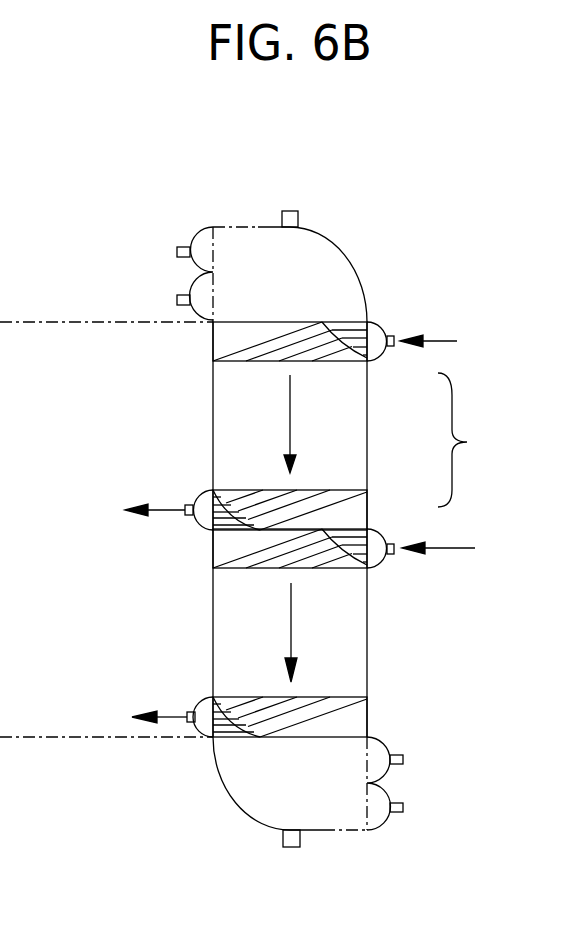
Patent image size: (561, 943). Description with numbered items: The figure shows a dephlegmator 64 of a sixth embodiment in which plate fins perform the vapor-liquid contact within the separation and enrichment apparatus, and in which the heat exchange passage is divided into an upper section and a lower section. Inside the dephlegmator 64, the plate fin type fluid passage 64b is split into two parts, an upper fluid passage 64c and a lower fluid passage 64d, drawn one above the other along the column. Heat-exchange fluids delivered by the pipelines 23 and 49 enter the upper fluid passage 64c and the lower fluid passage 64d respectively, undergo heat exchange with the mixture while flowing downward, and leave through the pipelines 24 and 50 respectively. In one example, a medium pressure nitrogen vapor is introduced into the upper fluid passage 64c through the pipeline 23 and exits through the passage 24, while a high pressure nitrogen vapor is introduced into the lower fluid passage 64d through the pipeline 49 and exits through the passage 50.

The dephlegmator 64 is at (350, 228).
The fluid passage 64b is at (480, 440).
The upper fluid passage 64c is at (337, 450).
The lower fluid passage 64d is at (323, 593).
The pipeline 23 is at (448, 341).
The pipeline 24 is at (180, 508).
The pipeline 49 is at (457, 548).
The pipeline 50 is at (162, 713).